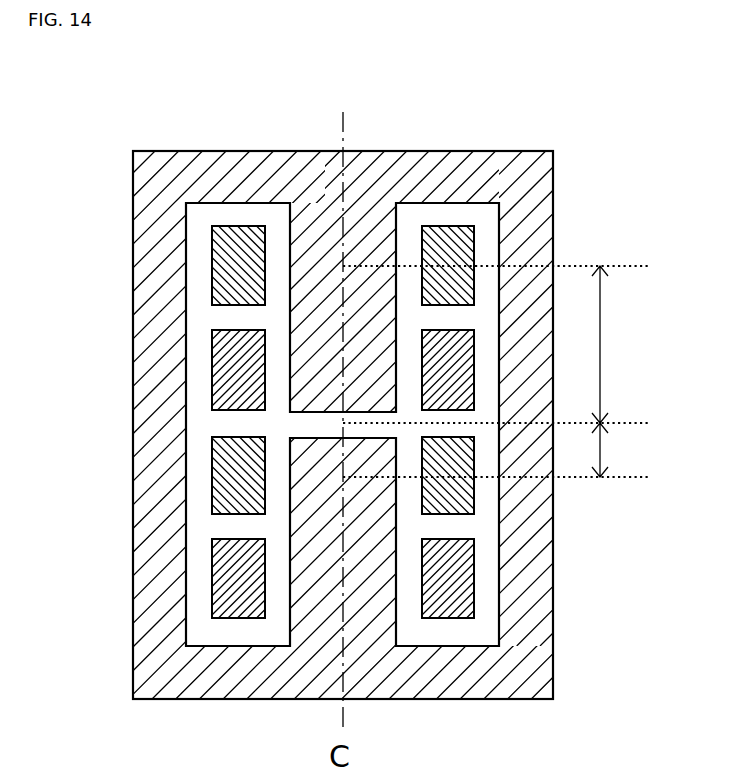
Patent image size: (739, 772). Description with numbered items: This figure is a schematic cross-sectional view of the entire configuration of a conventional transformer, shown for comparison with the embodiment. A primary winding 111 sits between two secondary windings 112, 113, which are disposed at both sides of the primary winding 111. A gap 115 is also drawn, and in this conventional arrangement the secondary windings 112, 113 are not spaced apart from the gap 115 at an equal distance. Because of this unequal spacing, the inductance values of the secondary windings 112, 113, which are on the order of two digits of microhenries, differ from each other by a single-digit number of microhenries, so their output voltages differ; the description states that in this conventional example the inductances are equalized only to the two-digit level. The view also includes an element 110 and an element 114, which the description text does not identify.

The core body 110 is at (282, 150).
The primary winding 111 is at (228, 348).
The secondary winding 112 is at (227, 263).
The secondary winding 113 is at (228, 482).
The fourth coil conductor 114 is at (225, 567).
The gap 115 is at (310, 423).